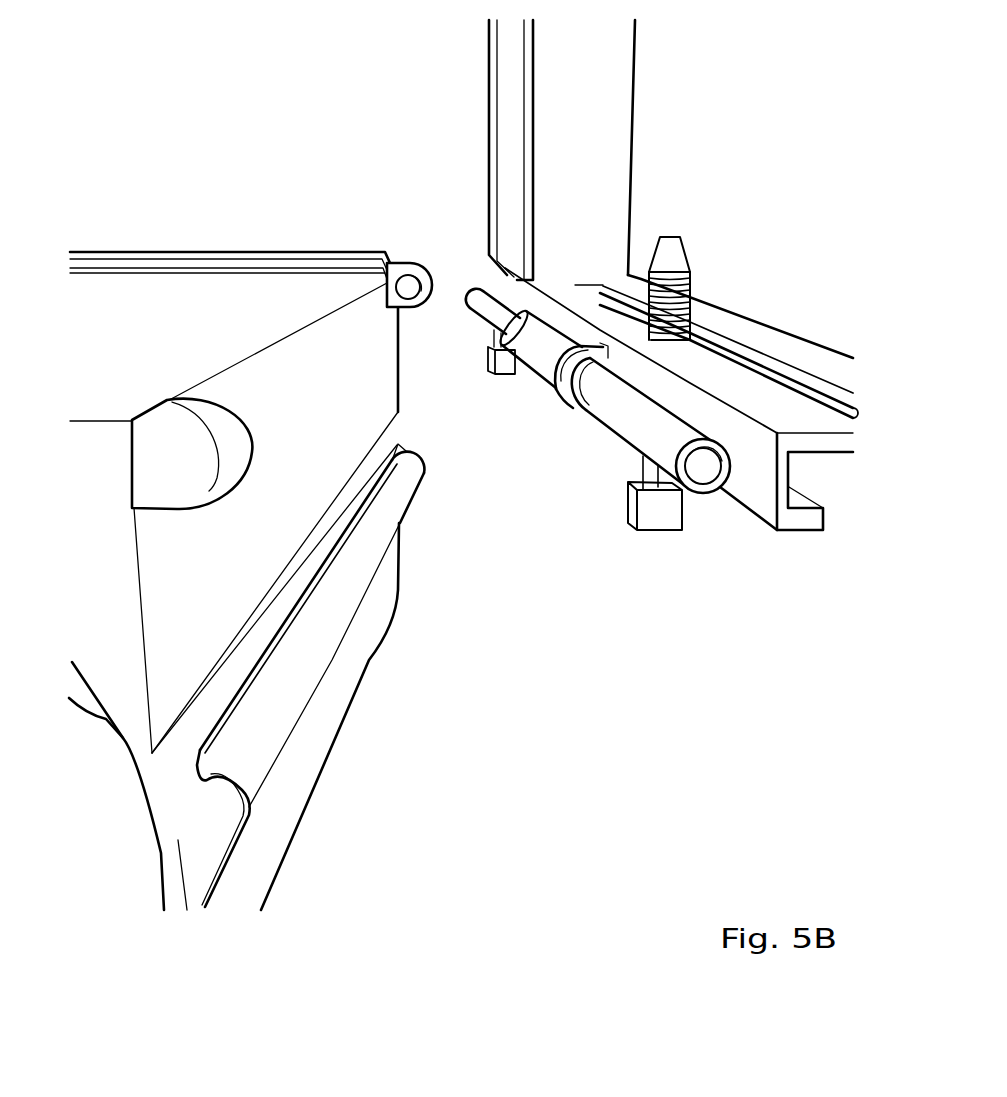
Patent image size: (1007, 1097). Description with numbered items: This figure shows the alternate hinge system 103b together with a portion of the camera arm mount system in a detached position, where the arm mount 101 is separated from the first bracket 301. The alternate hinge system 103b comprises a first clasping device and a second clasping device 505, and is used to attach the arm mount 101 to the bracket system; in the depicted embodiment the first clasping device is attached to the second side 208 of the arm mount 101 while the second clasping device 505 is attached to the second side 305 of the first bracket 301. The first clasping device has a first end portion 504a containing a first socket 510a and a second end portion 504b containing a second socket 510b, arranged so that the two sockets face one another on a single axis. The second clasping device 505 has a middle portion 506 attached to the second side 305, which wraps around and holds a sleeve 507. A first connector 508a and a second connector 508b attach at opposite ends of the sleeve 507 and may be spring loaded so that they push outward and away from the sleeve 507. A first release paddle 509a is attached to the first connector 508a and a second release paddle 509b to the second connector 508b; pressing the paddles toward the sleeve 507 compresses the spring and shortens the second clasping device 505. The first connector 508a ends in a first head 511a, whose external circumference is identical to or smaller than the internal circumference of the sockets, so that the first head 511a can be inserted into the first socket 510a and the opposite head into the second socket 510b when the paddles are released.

The arm mount 101 is at (207, 292).
The alternate hinge system 103b is at (315, 113).
The second side 208 is at (222, 565).
The first bracket 301 is at (613, 127).
The second side 305 is at (762, 520).
The first end portion 504a is at (230, 408).
The second end portion 504b is at (339, 247).
The second clasping device 505 is at (546, 330).
The middle portion 506 is at (583, 320).
The sleeve 507 is at (567, 387).
The first connector 508a is at (648, 420).
The second connector 508b is at (483, 288).
The first release paddle 509a is at (638, 533).
The second release paddle 509b is at (487, 343).
The first socket 510a is at (252, 425).
The second socket 510b is at (412, 258).
The first head 511a is at (703, 472).